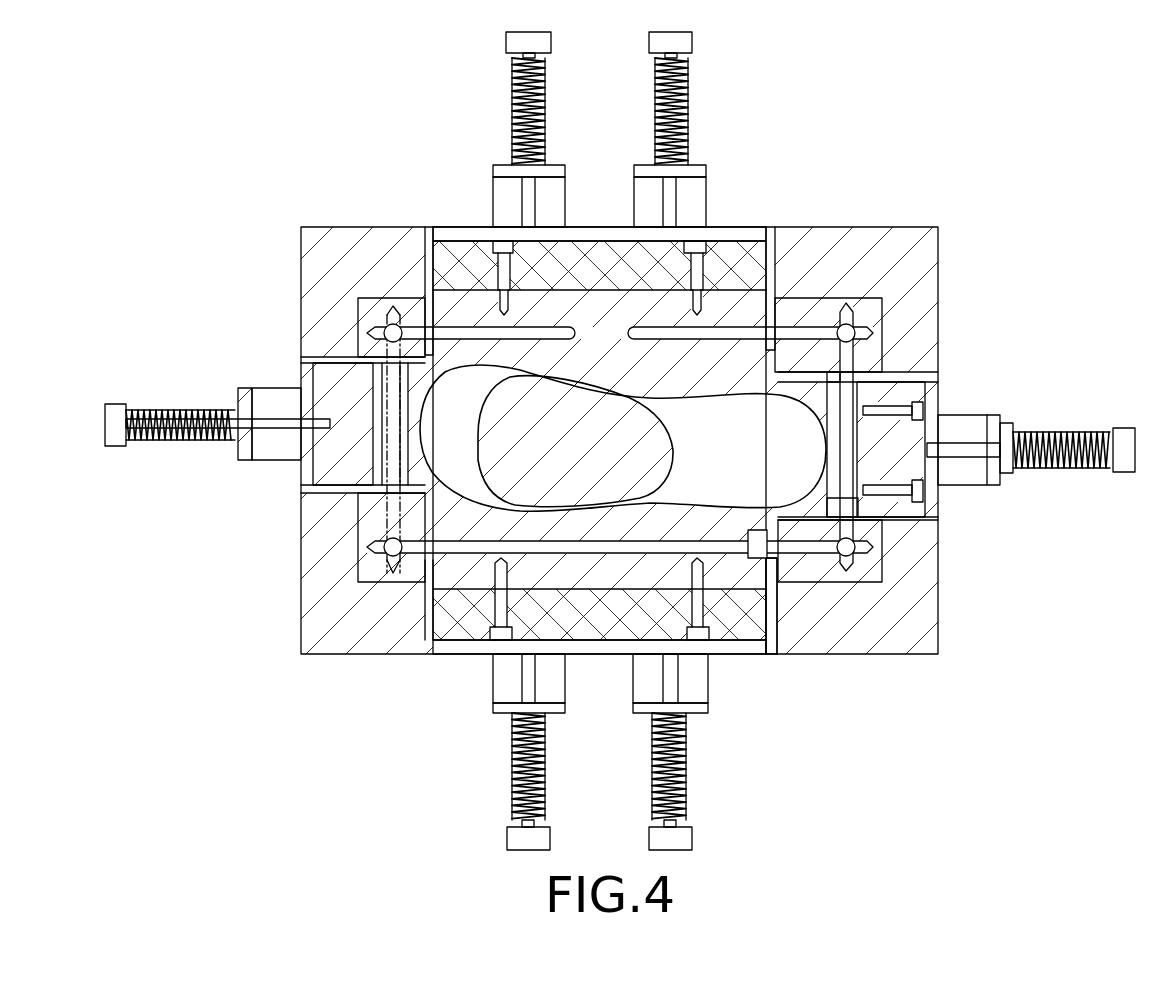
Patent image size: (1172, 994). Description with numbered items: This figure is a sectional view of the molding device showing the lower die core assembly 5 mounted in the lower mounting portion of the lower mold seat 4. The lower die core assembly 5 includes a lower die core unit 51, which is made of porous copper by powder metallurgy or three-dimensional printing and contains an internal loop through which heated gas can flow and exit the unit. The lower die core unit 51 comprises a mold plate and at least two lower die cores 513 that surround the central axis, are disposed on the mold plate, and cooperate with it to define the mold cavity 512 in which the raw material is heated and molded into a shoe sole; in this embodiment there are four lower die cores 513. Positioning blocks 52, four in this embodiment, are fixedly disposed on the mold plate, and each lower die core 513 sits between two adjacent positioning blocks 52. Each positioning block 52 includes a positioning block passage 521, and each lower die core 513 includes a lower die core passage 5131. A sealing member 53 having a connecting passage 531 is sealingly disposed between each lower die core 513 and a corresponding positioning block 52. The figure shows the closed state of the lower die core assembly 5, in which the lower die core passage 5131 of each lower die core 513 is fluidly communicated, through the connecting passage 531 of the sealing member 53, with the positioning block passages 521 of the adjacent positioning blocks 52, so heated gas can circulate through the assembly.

The lower mold seat 4 is at (965, 645).
The lower die core assembly 5 is at (456, 238).
The lower die core unit 51 is at (747, 240).
The mold cavity 512 is at (480, 505).
The lower die core 513 is at (602, 300).
The lower die core passage 5131 is at (477, 333).
The positioning block 52 is at (357, 300).
The positioning block passage 521 is at (822, 320).
The sealing member 53 is at (765, 558).
The connecting passage 531 is at (760, 550).